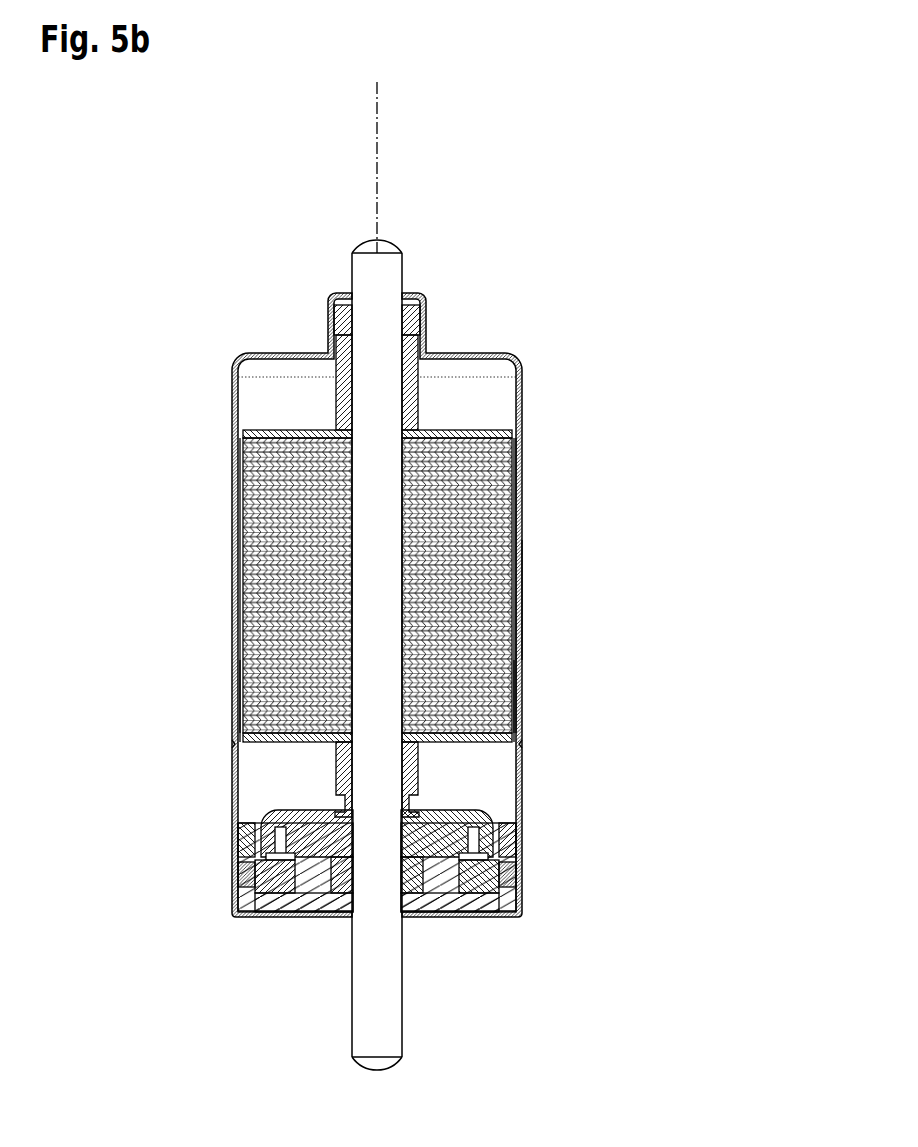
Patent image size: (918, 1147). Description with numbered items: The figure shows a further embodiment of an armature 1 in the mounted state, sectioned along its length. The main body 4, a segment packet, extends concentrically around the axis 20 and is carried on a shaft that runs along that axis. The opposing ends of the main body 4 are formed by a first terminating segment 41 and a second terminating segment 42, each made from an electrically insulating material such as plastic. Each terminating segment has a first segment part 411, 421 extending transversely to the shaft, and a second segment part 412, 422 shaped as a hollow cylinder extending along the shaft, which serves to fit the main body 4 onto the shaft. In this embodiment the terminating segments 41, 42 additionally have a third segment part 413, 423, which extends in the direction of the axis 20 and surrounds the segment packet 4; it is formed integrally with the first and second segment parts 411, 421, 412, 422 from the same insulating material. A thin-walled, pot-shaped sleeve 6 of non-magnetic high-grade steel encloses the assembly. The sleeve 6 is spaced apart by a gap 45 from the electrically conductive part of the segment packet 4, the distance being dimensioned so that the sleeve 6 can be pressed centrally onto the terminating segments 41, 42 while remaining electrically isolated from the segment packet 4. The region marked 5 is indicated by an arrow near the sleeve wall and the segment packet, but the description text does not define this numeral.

The armature 1 is at (668, 198).
The axis 20 is at (377, 203).
The main body 4 is at (244, 587).
The first terminating segment 41 is at (453, 432).
The first segment part 411 is at (290, 432).
The second segment part 412 is at (345, 387).
The third segment part 413 is at (242, 485).
The second terminating segment 42 is at (467, 742).
The first segment part 421 is at (293, 742).
The second segment part 422 is at (347, 780).
The third segment part 423 is at (242, 683).
The gap 45 is at (523, 537).
The air gap / winding 5 is at (488, 602).
The sleeve 6 is at (522, 400).